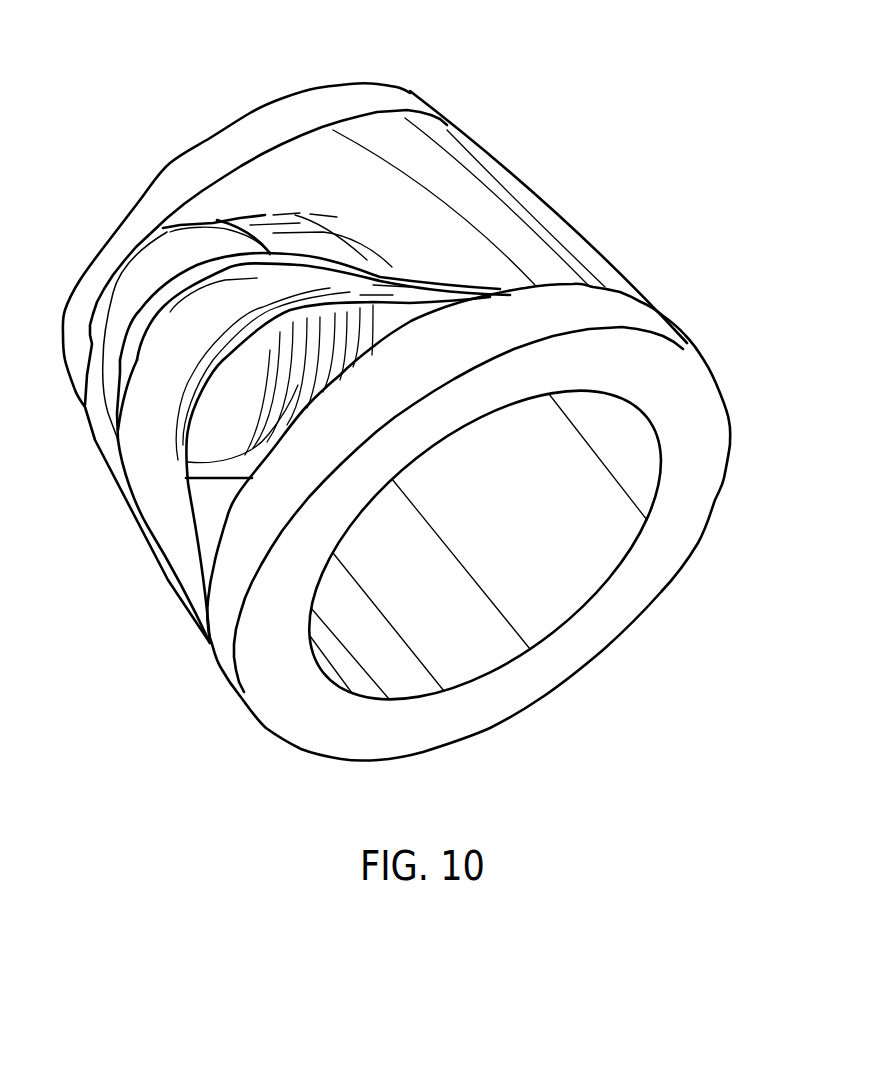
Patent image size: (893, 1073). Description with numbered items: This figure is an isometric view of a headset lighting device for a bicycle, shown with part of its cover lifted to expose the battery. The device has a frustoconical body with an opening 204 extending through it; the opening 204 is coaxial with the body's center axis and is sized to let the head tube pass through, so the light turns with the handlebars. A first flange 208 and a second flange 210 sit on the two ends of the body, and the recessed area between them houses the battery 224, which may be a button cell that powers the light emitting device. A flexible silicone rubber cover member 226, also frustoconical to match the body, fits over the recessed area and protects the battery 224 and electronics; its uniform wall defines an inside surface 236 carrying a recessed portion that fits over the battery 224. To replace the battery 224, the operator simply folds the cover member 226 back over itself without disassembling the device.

The opening 204 is at (572, 592).
The first flange 208 is at (407, 101).
The second flange 210 is at (650, 320).
The battery 224 is at (245, 416).
The cover member 226 is at (570, 242).
The inside surface 236 is at (363, 340).